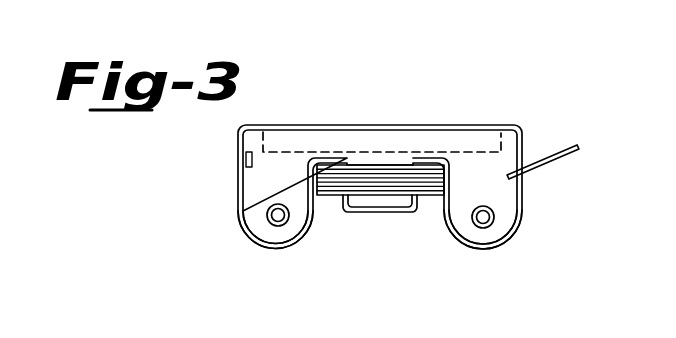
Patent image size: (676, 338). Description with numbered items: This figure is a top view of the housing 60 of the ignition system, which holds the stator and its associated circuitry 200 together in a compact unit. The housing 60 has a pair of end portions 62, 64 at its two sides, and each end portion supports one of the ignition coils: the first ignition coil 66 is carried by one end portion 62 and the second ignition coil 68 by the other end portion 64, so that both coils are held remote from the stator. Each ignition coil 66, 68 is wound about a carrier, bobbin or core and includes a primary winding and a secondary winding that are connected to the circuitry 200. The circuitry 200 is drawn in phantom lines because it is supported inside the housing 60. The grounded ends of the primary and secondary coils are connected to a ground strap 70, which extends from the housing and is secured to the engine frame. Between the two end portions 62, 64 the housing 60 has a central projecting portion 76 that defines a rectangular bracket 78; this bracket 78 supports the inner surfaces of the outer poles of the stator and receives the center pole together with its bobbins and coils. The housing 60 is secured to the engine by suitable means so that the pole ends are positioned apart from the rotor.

The housing 60 is at (400, 110).
The end portion 62 is at (248, 240).
The end portion 64 is at (510, 241).
The first ignition coil 66 is at (277, 232).
The second ignition coil 68 is at (478, 232).
The ground strap 70 is at (540, 160).
The central projecting portion 76 is at (410, 216).
The rectangular bracket 78 is at (379, 207).
The circuitry 200 is at (449, 152).